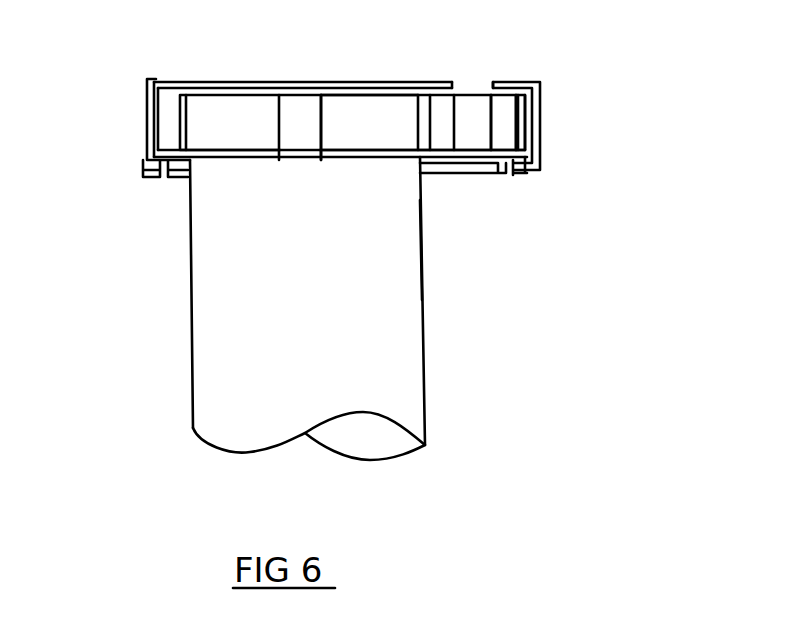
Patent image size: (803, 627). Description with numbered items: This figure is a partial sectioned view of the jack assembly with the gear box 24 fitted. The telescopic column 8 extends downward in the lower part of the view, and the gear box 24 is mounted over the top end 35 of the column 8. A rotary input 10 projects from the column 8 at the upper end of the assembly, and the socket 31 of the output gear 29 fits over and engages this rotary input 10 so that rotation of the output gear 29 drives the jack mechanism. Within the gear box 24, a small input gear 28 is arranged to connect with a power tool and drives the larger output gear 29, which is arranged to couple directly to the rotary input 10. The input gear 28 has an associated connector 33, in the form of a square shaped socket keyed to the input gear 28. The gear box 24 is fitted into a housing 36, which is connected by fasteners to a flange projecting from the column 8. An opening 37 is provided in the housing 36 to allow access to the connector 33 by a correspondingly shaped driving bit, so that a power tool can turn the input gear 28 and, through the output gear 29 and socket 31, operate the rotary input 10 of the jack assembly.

The telescopic column 8 is at (422, 348).
The rotary input 10 is at (293, 122).
The gear box 24 is at (233, 112).
The input gear 28 is at (505, 127).
The output gear 29 is at (370, 110).
The socket 31 is at (318, 118).
The connector 33 is at (472, 90).
The top end 35 is at (420, 245).
The housing 36 is at (148, 123).
The opening 37 is at (477, 70).